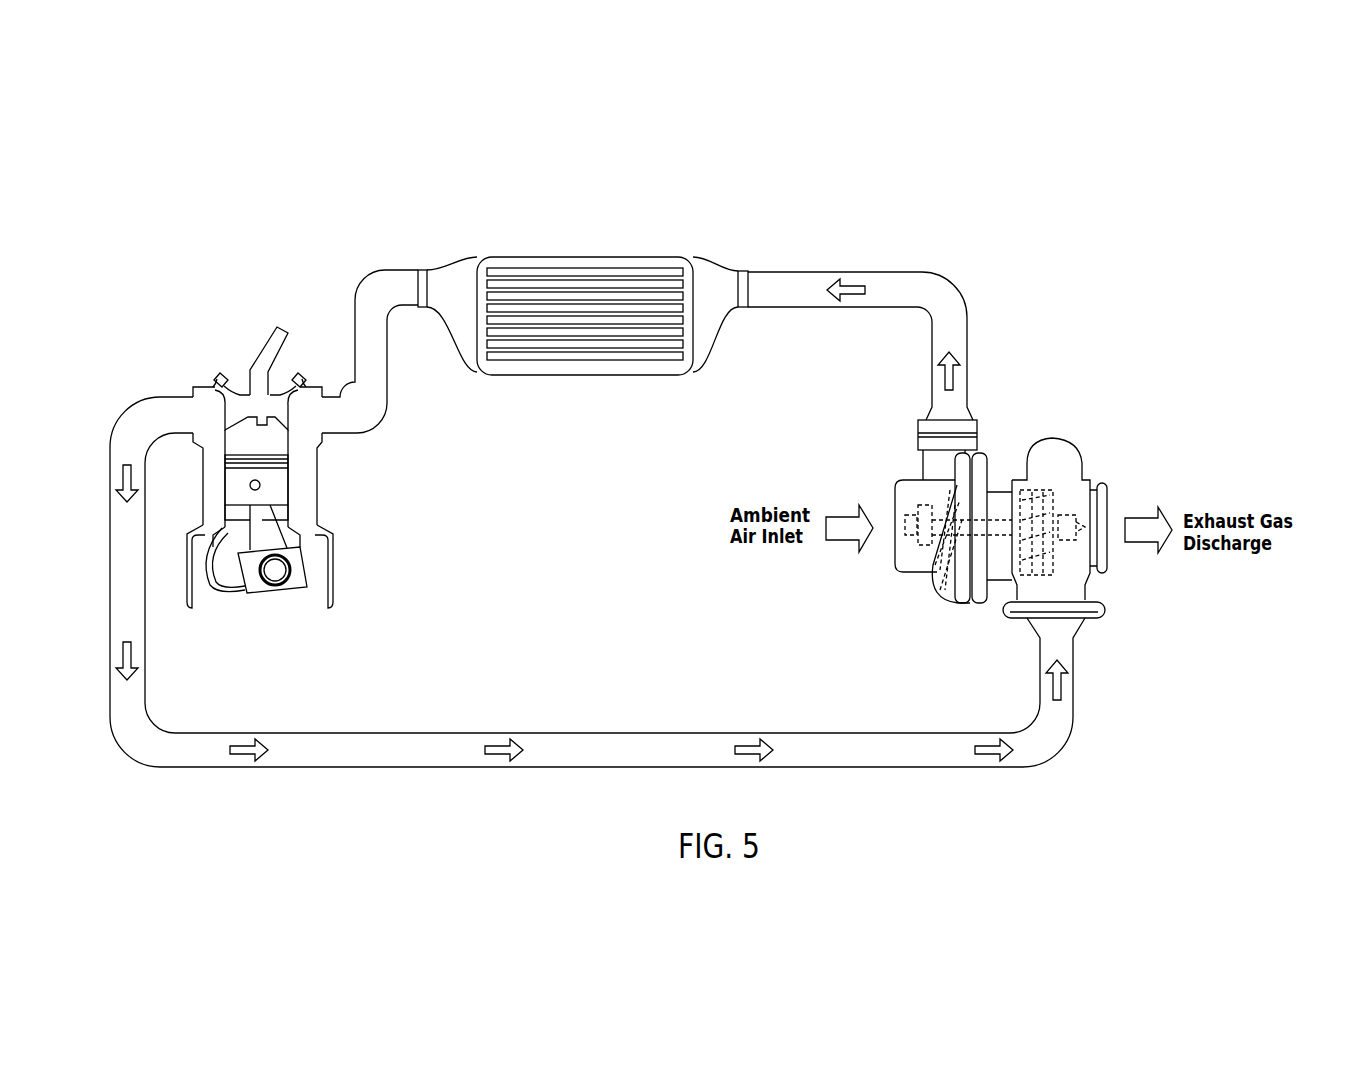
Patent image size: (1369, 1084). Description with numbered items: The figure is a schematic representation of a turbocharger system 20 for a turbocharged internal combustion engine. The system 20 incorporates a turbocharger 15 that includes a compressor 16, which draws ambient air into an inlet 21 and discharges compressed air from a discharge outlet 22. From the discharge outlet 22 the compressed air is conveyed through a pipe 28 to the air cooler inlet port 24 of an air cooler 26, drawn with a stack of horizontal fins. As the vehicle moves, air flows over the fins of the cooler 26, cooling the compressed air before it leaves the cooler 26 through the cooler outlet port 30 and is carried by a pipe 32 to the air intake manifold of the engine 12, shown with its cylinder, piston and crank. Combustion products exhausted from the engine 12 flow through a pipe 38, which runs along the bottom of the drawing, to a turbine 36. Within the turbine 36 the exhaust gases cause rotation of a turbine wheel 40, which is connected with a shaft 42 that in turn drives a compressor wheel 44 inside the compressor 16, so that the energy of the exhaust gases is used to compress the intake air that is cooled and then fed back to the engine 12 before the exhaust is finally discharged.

The engine 12 is at (316, 488).
The turbocharger 15 is at (978, 612).
The compressor 16 is at (917, 546).
The turbocharger system 20 is at (736, 203).
The inlet 21 is at (893, 503).
The discharge outlet 22 is at (915, 458).
The air cooler inlet port 24 is at (743, 307).
The air cooler 26 is at (550, 257).
The pipe 28 is at (955, 291).
The cooler outlet port 30 is at (425, 270).
The pipe 32 is at (363, 305).
The turbine 36 is at (1065, 447).
The pipe 38 is at (570, 733).
The turbine wheel 40 is at (1012, 480).
The shaft 42 is at (998, 490).
The compressor wheel 44 is at (940, 598).